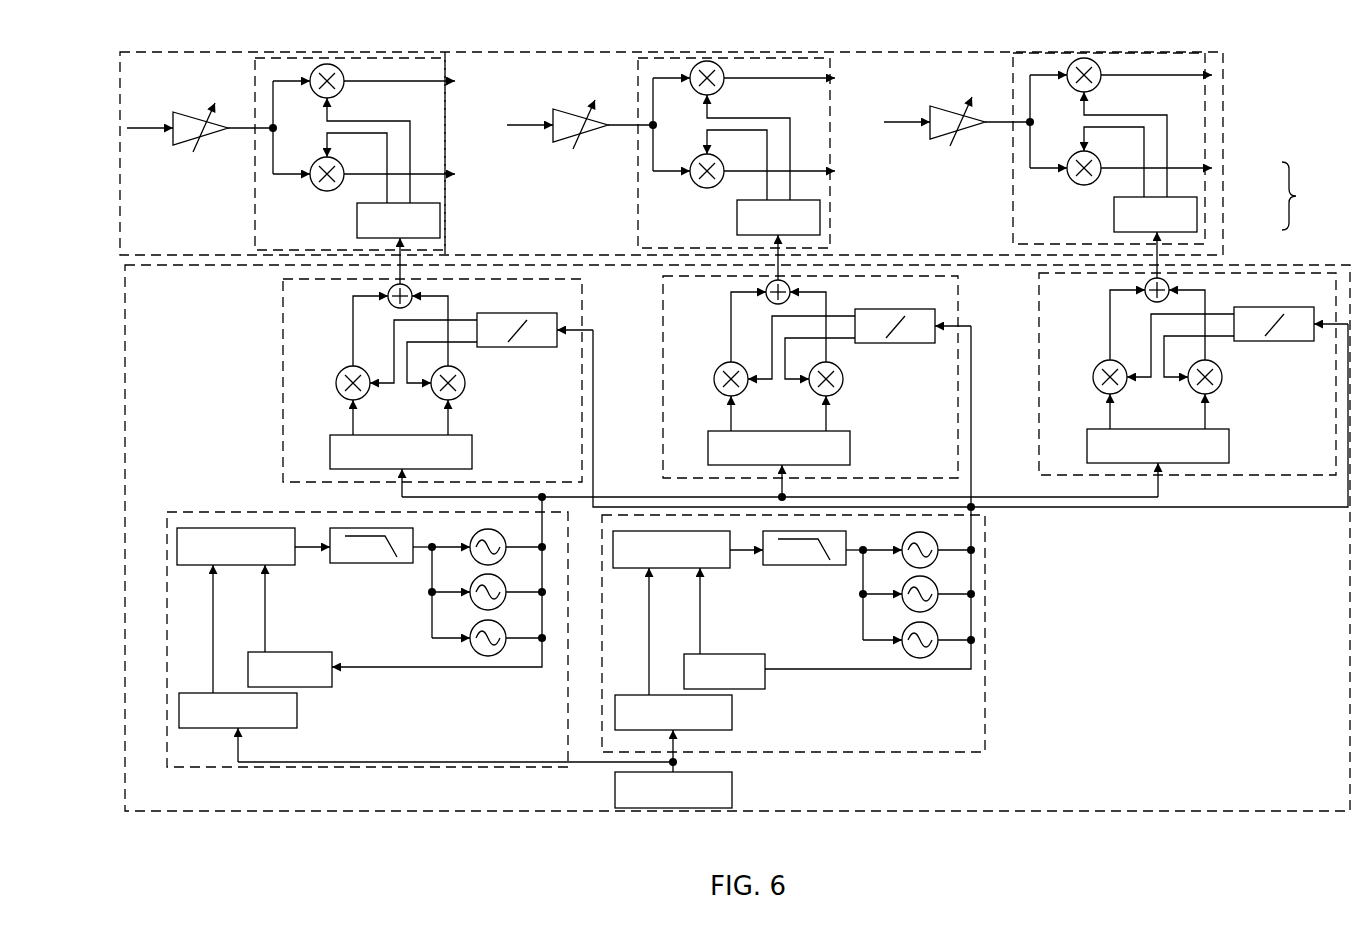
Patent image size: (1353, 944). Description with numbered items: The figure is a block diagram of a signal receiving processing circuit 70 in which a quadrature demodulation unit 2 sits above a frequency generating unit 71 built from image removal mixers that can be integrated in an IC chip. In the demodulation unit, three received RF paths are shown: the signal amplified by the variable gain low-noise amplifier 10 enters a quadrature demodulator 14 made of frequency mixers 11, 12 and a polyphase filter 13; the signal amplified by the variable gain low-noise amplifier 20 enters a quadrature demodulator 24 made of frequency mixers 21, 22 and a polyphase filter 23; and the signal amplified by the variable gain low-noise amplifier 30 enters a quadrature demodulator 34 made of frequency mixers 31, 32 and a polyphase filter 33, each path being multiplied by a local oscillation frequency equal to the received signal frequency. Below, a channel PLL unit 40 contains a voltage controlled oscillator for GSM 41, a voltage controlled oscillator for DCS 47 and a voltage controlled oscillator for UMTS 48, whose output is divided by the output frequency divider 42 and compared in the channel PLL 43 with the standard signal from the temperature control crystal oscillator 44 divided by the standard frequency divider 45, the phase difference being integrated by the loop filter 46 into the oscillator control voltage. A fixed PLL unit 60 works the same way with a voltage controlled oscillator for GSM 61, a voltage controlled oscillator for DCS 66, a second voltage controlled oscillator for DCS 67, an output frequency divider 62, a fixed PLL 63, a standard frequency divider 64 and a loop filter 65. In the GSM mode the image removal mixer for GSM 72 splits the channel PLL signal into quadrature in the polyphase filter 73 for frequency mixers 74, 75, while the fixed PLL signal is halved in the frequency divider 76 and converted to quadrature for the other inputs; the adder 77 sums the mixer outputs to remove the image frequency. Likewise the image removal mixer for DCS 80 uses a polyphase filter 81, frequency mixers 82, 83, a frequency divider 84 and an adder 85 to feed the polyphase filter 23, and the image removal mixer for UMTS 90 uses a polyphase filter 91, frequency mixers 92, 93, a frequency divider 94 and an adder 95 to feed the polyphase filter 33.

The quadrature demodulation unit 2 is at (1232, 191).
The variable gain low-noise amplifier 10 is at (195, 113).
The frequency mixer 11 is at (313, 94).
The frequency mixer 12 is at (311, 189).
The polyphase filter 13 is at (357, 221).
The quadrature demodulator 14 is at (254, 201).
The variable gain low-noise amplifier 20 is at (557, 110).
The frequency mixer 21 is at (690, 97).
The frequency mixer 22 is at (683, 185).
The polyphase filter 23 is at (754, 217).
The quadrature demodulator 24 is at (703, 153).
The variable gain low-noise amplifier 30 is at (934, 107).
The frequency mixer 31 is at (1067, 94).
The frequency mixer 32 is at (1060, 182).
The polyphase filter 33 is at (1131, 214).
The quadrature demodulator 34 is at (1079, 148).
The channel PLL unit 40 is at (194, 512).
The voltage controlled oscillator for GSM 41 is at (474, 558).
The output frequency divider 42 is at (305, 652).
The channel PLL 43 is at (193, 566).
The temperature control crystal oscillator 44 is at (732, 790).
The standard frequency divider 45 is at (297, 711).
The loop filter 46 is at (375, 564).
The voltage controlled oscillator for DCS 47 is at (474, 604).
The voltage controlled oscillator for UMTS 48 is at (474, 648).
The fixed PLL unit 60 is at (987, 618).
The voltage controlled oscillator for GSM 61 is at (906, 562).
The output frequency divider 62 is at (740, 654).
The fixed PLL 63 is at (627, 569).
The standard frequency divider 64 is at (732, 713).
The loop filter 65 is at (805, 566).
The voltage controlled oscillator for DCS 66 is at (906, 606).
The voltage controlled oscillator for DCS 67 is at (906, 648).
The signal receiving processing circuit 70 is at (1301, 196).
The frequency generating unit 71 is at (1250, 262).
The image removal mixer for GSM 72 is at (584, 302).
The polyphase filter 73 is at (472, 452).
The frequency mixer 74 is at (336, 383).
The frequency mixer 75 is at (465, 388).
The frequency divider 76 is at (520, 348).
The adder 77 is at (392, 304).
The image removal mixer for DCS 80 is at (842, 377).
The polyphase filter 81 is at (803, 448).
The frequency mixer 82 is at (706, 379).
The frequency mixer 83 is at (849, 385).
The frequency divider 84 is at (895, 347).
The adder 85 is at (762, 308).
The image removal mixer for UMTS 90 is at (1157, 374).
The polyphase filter 91 is at (1182, 446).
The frequency mixer 92 is at (1085, 377).
The frequency mixer 93 is at (1228, 383).
The frequency divider 94 is at (1274, 345).
The adder 95 is at (1141, 306).